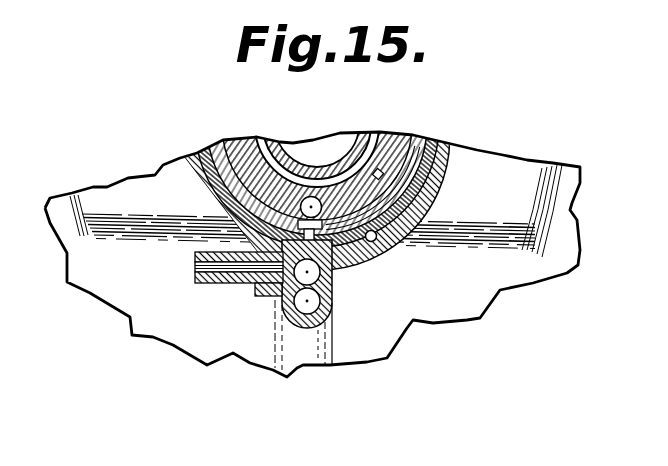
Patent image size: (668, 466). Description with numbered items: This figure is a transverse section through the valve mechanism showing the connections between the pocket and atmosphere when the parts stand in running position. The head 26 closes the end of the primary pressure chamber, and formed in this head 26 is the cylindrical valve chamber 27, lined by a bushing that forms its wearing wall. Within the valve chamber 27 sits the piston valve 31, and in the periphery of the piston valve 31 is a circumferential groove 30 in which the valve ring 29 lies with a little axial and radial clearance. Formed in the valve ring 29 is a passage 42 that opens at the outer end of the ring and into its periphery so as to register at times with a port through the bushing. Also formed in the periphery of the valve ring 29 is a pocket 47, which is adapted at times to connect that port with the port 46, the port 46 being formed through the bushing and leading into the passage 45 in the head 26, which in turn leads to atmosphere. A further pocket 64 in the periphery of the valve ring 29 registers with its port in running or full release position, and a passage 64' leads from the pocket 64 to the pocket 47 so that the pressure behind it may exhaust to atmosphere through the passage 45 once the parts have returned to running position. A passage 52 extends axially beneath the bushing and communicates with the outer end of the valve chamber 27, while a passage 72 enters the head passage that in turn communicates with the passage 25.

The passage 25 is at (595, 13).
The head 26 is at (573, 205).
The cylindrical valve chamber 27 is at (197, 157).
The valve ring 29 is at (390, 136).
The circumferential groove 30 is at (255, 138).
The piston valve 31 is at (285, 148).
The passage 42 is at (312, 196).
The passage 45 is at (289, 279).
The port 46 is at (338, 262).
The pocket 47 is at (220, 218).
The passage 52 is at (372, 241).
The pocket 64 is at (432, 180).
The passage 64' is at (338, 155).
The passage 72 is at (333, 318).